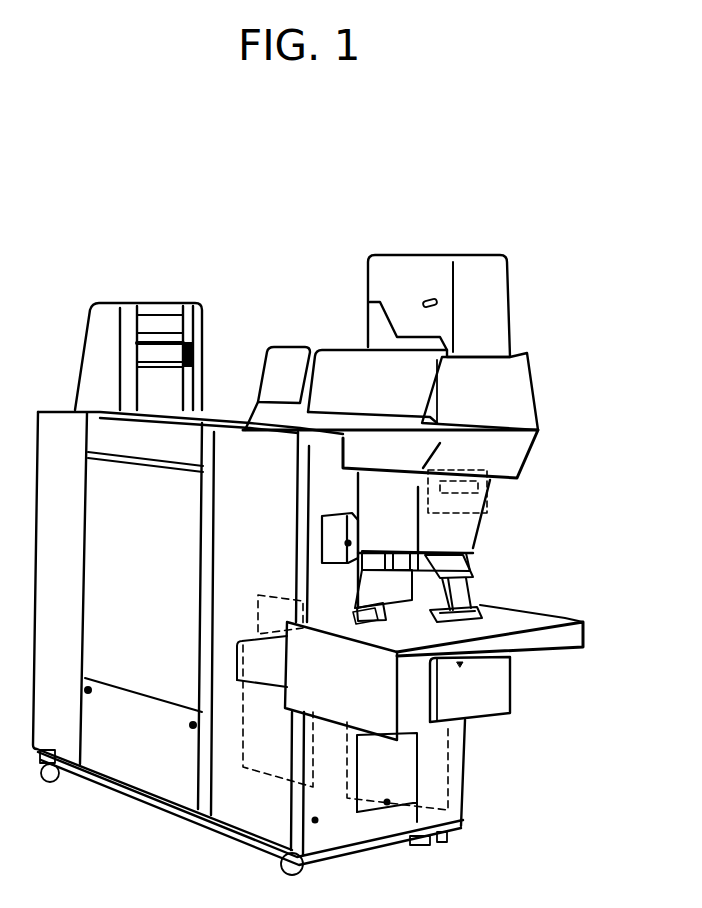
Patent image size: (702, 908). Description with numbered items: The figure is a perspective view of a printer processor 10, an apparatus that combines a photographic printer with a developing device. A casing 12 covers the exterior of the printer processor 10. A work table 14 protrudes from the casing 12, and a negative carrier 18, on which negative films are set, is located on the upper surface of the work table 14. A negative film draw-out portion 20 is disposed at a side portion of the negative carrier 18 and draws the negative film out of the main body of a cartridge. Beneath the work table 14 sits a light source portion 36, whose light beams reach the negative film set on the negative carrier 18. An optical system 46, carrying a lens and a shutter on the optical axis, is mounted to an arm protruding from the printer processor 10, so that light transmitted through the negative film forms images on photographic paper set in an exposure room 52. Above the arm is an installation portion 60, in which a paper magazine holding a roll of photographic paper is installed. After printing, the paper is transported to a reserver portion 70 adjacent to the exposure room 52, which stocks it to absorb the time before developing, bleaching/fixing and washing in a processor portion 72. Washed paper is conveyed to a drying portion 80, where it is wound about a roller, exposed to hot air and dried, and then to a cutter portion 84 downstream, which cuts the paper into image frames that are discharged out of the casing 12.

The printer processor 10 is at (314, 261).
The casing 12 is at (225, 422).
The work table 14 is at (565, 622).
The negative carrier 18 is at (478, 601).
The negative film draw-out portion 20 is at (355, 617).
The light source portion 36 is at (514, 706).
The optical system 46 is at (468, 532).
The exposure room 52 is at (498, 403).
The installation portion 60 is at (495, 305).
The reserver portion 70 is at (273, 503).
The processor portion 72 is at (160, 567).
The drying portion 80 is at (80, 533).
The cutter portion 84 is at (98, 342).